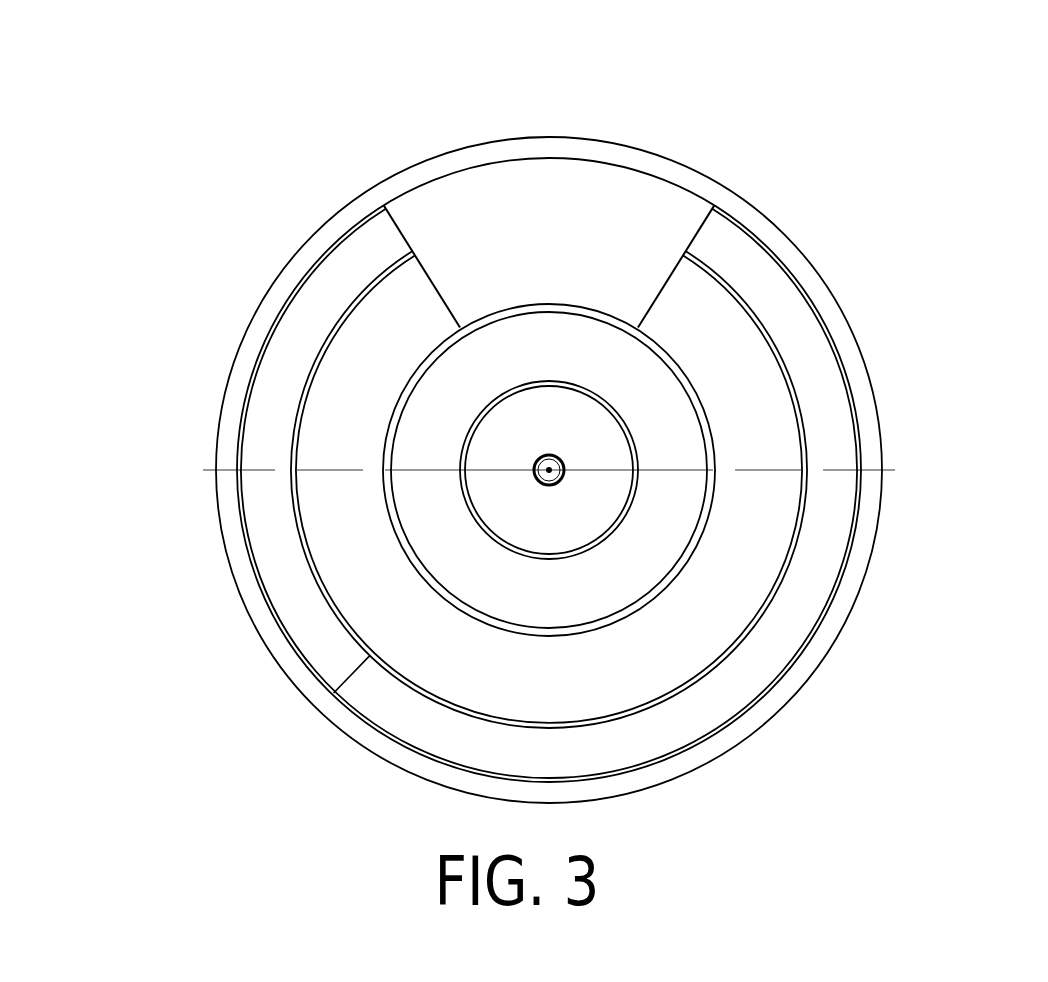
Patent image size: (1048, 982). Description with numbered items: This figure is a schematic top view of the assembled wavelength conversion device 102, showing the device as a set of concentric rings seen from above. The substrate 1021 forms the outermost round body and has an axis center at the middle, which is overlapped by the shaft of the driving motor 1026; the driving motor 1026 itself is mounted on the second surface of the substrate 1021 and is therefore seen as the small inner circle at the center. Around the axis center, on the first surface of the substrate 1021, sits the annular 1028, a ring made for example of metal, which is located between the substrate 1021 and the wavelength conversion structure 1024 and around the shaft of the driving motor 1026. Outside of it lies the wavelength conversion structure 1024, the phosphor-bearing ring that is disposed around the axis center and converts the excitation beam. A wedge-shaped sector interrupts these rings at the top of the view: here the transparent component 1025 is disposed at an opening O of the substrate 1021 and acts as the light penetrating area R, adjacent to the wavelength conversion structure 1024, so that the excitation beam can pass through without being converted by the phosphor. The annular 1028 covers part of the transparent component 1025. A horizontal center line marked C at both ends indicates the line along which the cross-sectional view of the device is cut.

The wavelength conversion device 102 is at (155, 152).
The substrate 1021 is at (855, 365).
The wavelength conversion structure 1024 is at (772, 650).
The transparent component 1025 is at (482, 218).
The driving motor 1026 is at (542, 413).
The annular 1028 is at (587, 348).
The opening O is at (383, 244).
The light penetrating area R is at (287, 72).
The line C- C is at (145, 470).